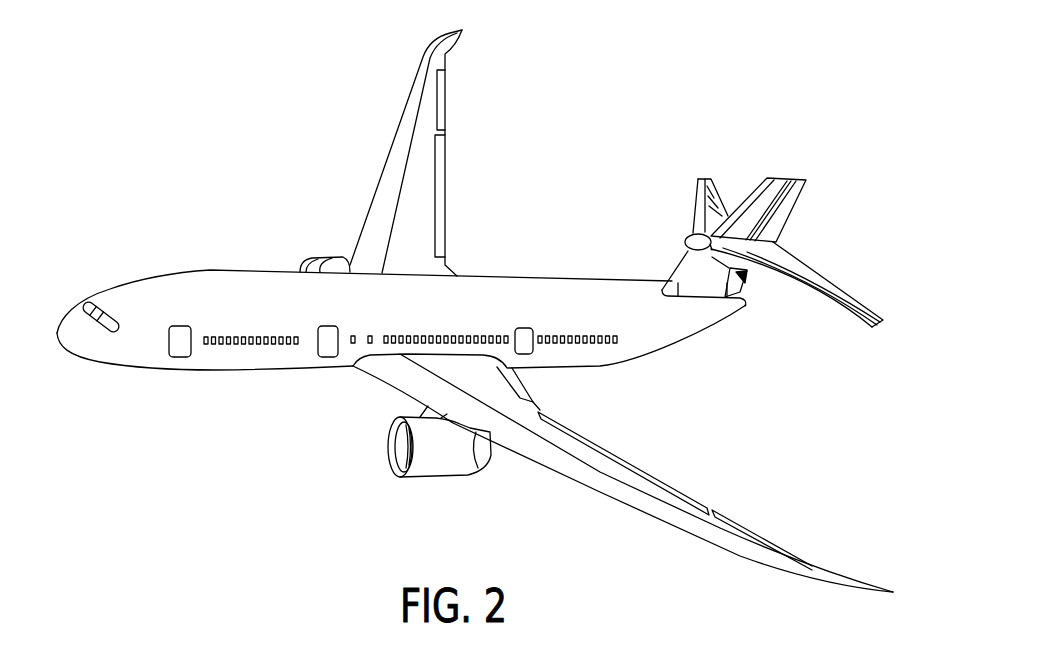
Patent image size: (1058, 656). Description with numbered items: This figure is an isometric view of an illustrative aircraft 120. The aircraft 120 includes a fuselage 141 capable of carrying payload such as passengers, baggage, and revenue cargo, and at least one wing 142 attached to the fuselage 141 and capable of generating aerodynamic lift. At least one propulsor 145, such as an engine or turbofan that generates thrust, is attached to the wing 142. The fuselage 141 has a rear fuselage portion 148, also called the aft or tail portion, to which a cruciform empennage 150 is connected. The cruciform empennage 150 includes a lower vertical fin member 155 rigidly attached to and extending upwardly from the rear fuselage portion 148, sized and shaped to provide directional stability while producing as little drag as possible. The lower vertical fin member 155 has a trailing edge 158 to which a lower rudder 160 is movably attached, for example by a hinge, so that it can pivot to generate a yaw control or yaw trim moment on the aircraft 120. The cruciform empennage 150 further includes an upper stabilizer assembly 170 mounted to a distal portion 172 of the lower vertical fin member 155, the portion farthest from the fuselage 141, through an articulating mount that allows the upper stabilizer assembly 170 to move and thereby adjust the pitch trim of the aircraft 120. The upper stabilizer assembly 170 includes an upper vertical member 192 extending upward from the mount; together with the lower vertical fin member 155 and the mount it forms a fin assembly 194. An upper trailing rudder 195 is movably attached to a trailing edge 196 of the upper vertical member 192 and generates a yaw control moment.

The aircraft 120 is at (475, 300).
The fuselage 141 is at (292, 293).
The wing 142 is at (535, 448).
The propulsor 145 is at (392, 462).
The rear fuselage portion 148 is at (603, 292).
The cruciform empennage 150 is at (749, 184).
The lower vertical fin member 155 is at (678, 296).
The trailing edge 158 is at (744, 279).
The lower rudder 160 is at (727, 297).
The upper stabilizer assembly 170 is at (797, 203).
The distal portion 172 is at (707, 263).
The upper vertical member 192 is at (767, 177).
The fin assembly 194 is at (688, 173).
The upper trailing rudder 195 is at (790, 201).
The trailing edge 196 is at (779, 213).